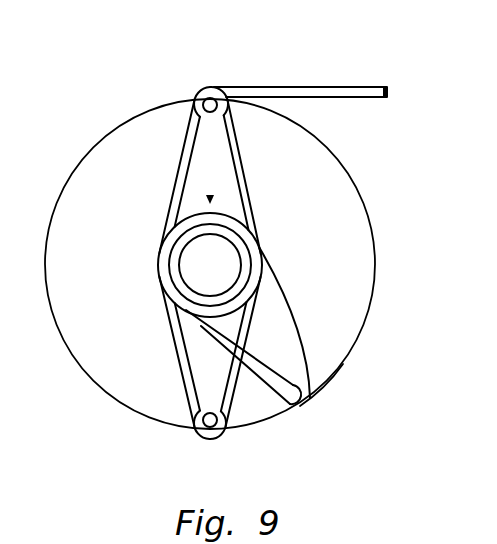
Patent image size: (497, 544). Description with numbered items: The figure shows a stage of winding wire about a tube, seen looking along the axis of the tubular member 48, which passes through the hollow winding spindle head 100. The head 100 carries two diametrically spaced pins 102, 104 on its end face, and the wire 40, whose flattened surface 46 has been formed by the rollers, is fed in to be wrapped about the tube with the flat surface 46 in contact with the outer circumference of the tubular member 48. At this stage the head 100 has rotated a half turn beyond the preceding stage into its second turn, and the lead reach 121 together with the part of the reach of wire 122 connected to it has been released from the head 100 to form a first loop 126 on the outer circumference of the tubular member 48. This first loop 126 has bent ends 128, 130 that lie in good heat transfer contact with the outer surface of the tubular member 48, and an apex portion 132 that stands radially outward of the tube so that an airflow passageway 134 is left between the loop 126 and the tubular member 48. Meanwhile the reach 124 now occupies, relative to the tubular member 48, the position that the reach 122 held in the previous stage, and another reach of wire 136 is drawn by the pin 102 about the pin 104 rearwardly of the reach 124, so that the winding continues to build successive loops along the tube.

The winding spindle head 100 is at (106, 394).
The wire 40 is at (348, 86).
The flattened surface 46 is at (362, 98).
The pin 104 is at (210, 98).
The pin 102 is at (212, 436).
The reach of wire 122 is at (187, 152).
The reach of wire 124 is at (236, 165).
The bent end 130 is at (160, 285).
The bent end 128 is at (250, 255).
The tubular member 48 is at (238, 243).
The reach of wire 136 is at (182, 351).
The lead reach 121 is at (278, 298).
The airflow passageway 134 is at (350, 335).
The apex portion 132 is at (303, 408).
The first loop 126 is at (309, 367).